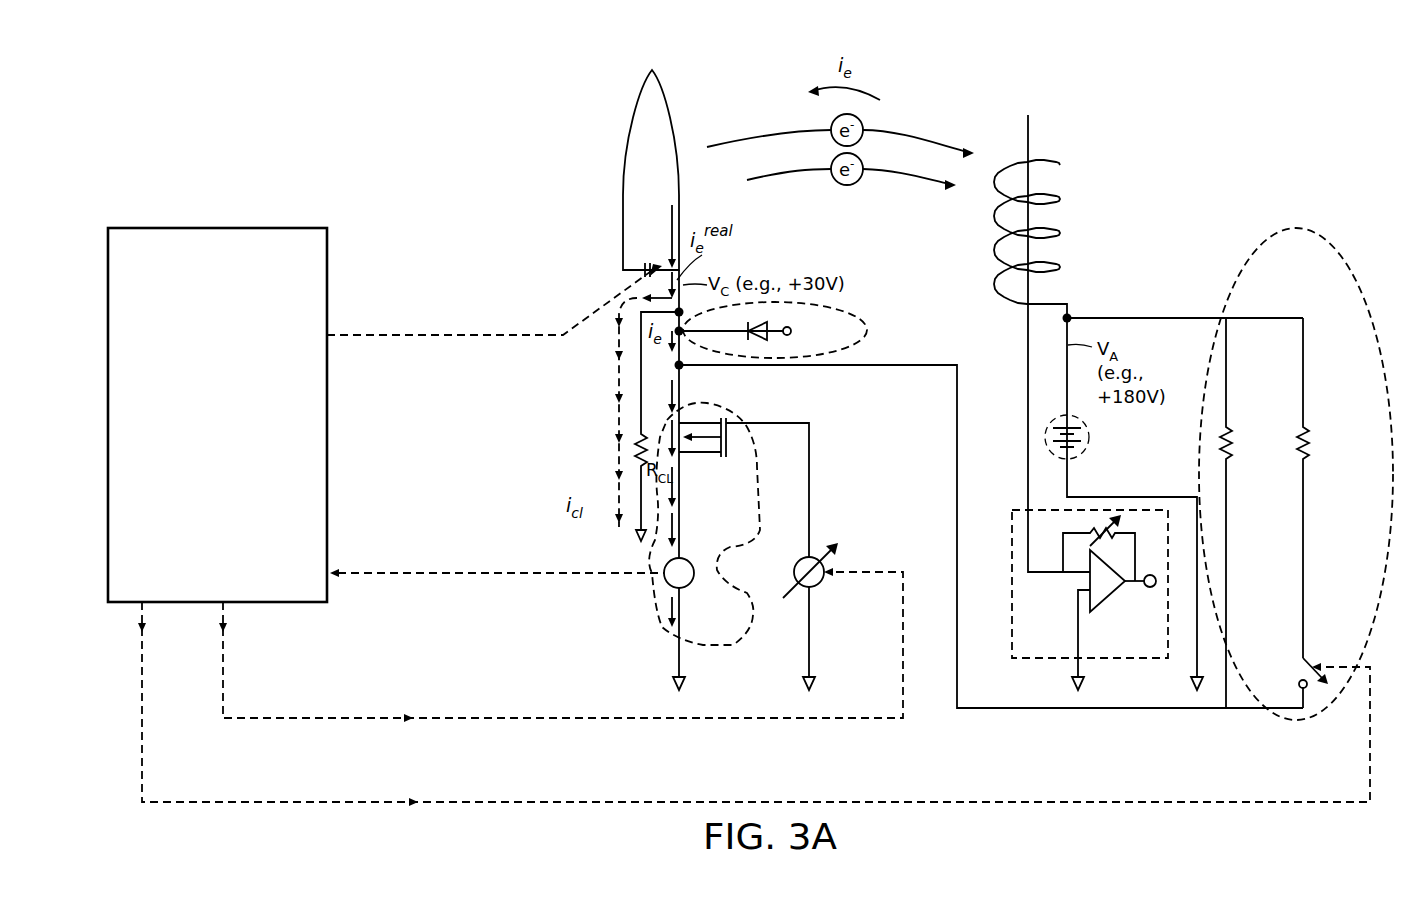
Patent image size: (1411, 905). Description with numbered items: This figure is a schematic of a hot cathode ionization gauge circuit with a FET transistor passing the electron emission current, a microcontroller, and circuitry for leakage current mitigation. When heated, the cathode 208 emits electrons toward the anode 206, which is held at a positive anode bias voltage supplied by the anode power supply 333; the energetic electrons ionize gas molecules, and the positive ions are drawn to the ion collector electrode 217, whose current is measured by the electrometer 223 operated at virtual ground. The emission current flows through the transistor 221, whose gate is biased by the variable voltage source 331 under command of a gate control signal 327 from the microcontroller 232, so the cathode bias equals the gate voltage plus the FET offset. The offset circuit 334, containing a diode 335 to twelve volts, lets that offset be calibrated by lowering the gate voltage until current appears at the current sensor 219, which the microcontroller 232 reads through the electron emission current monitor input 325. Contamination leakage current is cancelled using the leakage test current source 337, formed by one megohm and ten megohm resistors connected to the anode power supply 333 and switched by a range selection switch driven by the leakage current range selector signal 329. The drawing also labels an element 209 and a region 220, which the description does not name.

The anode 206 is at (1057, 190).
The cathode 208 is at (648, 73).
The control signal line 209 is at (373, 335).
The ion collector electrode 217 is at (1030, 240).
The current sensor 219 is at (690, 585).
The current limiting circuit 220 is at (711, 520).
The FET transistor 221 is at (722, 464).
The electrometer 223 is at (1011, 620).
The microcontroller 232 is at (237, 427).
The electron emission current monitor input 325 is at (373, 573).
The gate control signal 327 is at (358, 718).
The leakage current range selector signal 329 is at (370, 802).
The variable voltage source 331 is at (827, 578).
The anode power supply 333 is at (1090, 440).
The offset circuit 334 is at (805, 328).
The diode 335 is at (762, 327).
The leakage test current source 337 is at (1310, 229).